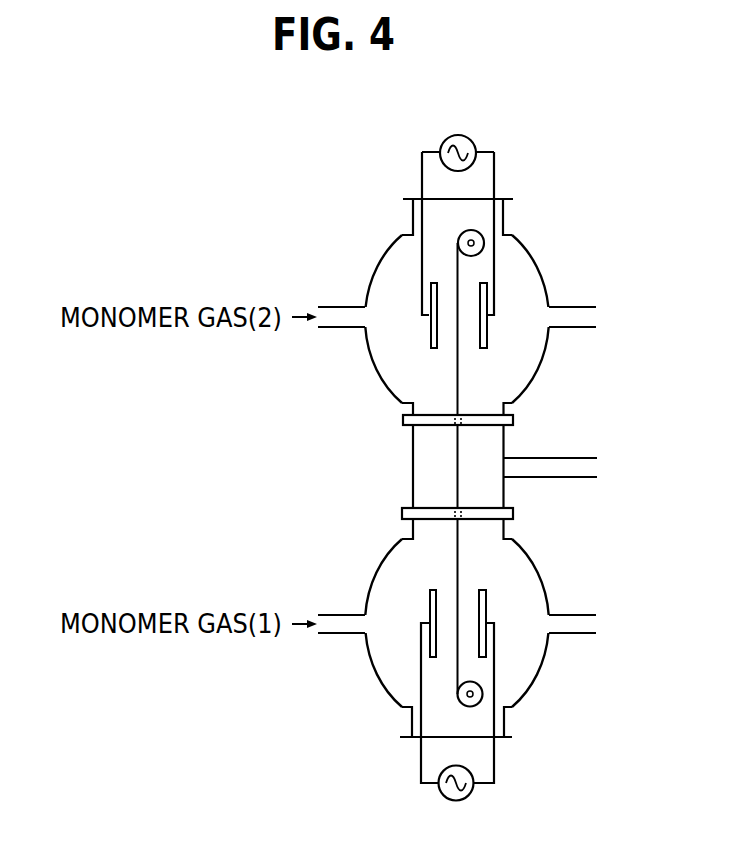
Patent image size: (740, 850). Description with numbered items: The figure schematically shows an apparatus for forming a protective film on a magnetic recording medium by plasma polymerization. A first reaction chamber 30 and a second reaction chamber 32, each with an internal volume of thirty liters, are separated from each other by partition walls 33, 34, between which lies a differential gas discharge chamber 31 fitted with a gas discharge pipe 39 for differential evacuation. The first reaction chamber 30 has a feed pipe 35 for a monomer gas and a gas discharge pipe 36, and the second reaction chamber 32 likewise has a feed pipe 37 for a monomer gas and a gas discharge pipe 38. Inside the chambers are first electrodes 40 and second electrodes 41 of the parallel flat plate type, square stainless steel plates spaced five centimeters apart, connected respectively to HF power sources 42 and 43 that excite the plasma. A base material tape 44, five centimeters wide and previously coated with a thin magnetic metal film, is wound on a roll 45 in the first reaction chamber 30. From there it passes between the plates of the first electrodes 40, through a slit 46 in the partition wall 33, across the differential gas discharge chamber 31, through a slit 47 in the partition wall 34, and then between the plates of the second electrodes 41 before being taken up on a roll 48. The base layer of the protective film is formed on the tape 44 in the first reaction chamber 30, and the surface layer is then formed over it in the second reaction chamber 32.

The first reaction chamber 30 is at (525, 582).
The differential gas discharge chamber 31 is at (423, 459).
The second reaction chamber 32 is at (522, 268).
The partition wall 33 is at (512, 512).
The partition wall 34 is at (513, 418).
The feed pipe 35 is at (338, 613).
The gas discharge pipe 36 is at (587, 634).
The feed pipe 37 is at (340, 306).
The gas discharge pipe 38 is at (588, 303).
The gas discharge pipe 39 is at (586, 457).
The first electrodes 40 is at (430, 597).
The second electrodes 41 is at (430, 338).
The HF power source 42 is at (470, 797).
The HF power source 43 is at (471, 140).
The base material tape 44 is at (457, 483).
The roll 45 is at (481, 698).
The slit 46 is at (458, 508).
The slit 47 is at (460, 416).
The roll 48 is at (483, 237).